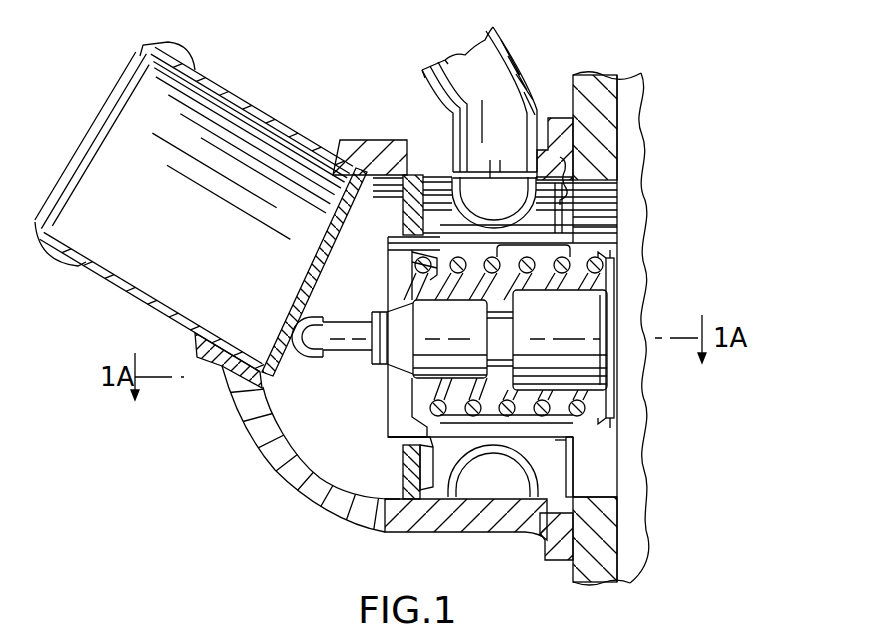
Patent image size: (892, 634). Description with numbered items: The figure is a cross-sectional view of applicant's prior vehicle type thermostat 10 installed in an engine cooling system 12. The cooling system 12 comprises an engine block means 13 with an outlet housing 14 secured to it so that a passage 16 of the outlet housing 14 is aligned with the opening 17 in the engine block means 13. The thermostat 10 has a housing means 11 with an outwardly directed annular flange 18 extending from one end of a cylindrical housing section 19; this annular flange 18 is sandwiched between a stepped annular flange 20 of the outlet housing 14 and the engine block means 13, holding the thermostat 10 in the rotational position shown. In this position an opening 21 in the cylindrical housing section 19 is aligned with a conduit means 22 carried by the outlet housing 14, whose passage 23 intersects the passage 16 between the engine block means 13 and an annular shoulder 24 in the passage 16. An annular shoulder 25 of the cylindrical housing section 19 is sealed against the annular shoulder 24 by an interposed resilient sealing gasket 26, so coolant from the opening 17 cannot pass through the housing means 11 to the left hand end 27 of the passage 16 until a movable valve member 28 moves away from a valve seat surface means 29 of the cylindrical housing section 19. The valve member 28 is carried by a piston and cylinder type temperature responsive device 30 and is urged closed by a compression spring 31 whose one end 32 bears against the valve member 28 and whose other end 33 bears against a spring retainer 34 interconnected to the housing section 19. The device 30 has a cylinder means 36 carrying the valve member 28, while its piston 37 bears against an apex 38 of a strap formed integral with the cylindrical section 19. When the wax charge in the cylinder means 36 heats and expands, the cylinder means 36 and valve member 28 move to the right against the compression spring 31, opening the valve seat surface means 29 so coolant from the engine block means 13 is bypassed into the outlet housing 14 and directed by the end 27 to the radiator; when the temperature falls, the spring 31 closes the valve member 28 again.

The vehicle type thermostat 10 is at (575, 215).
The housing means 11 is at (553, 483).
The engine cooling system 12 is at (676, 123).
The engine block means 13 is at (600, 95).
The outlet housing 14 is at (290, 477).
The passage 16 is at (377, 487).
The opening 17 is at (597, 495).
The annular flange 18 is at (585, 165).
The cylindrical housing section 19 is at (562, 130).
The stepped annular flange 20 is at (571, 142).
The opening 21 is at (523, 165).
The conduit means 22 is at (513, 55).
The passage 23 is at (440, 70).
The annular shoulder 24 is at (418, 165).
The annular shoulder 25 is at (338, 212).
The resilient sealing gasket 26 is at (430, 176).
The left hand end 27 is at (240, 408).
The movable valve member 28 is at (388, 293).
The valve seat surface means 29 is at (420, 440).
The piston and cylinder type temperature responsive device 30 is at (613, 323).
The compression spring 31 is at (527, 425).
The one end 32 is at (417, 268).
The other end 33 is at (592, 260).
The spring retainer 34 is at (612, 274).
The cylinder means 36 is at (597, 358).
The piston 37 is at (350, 350).
The apex 38 is at (298, 318).